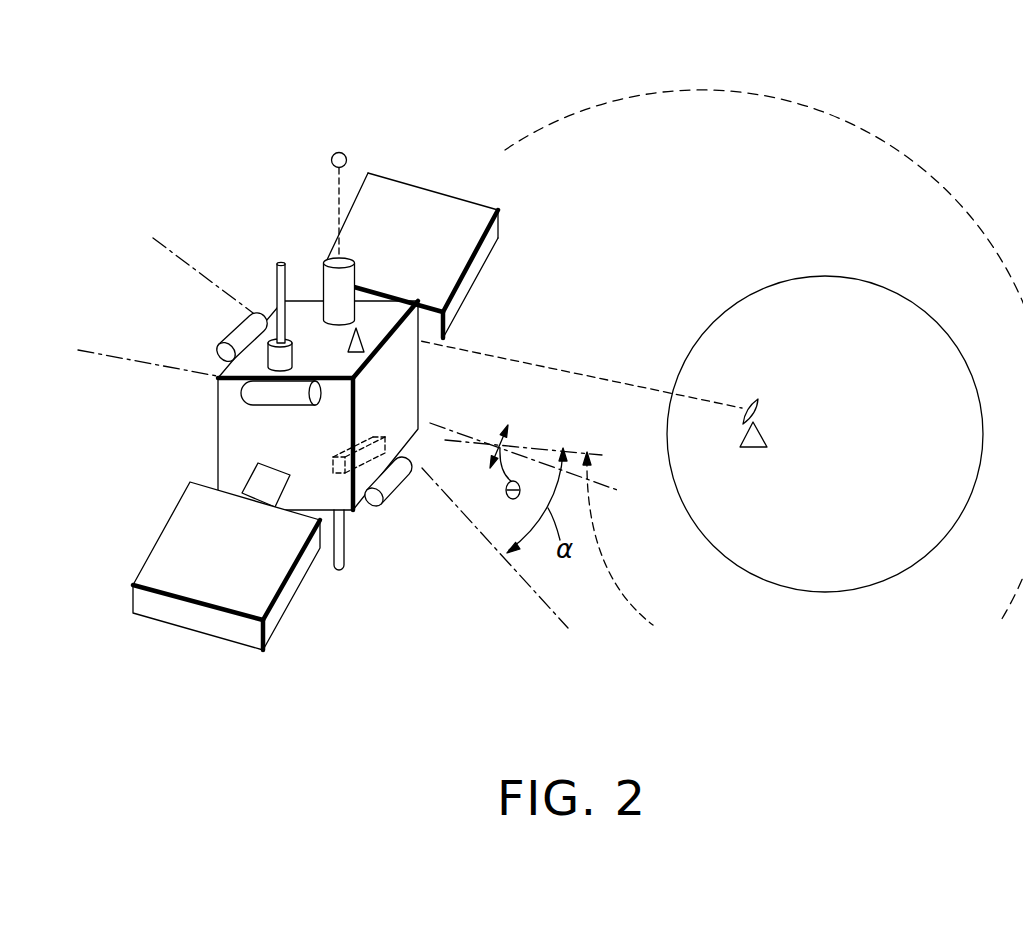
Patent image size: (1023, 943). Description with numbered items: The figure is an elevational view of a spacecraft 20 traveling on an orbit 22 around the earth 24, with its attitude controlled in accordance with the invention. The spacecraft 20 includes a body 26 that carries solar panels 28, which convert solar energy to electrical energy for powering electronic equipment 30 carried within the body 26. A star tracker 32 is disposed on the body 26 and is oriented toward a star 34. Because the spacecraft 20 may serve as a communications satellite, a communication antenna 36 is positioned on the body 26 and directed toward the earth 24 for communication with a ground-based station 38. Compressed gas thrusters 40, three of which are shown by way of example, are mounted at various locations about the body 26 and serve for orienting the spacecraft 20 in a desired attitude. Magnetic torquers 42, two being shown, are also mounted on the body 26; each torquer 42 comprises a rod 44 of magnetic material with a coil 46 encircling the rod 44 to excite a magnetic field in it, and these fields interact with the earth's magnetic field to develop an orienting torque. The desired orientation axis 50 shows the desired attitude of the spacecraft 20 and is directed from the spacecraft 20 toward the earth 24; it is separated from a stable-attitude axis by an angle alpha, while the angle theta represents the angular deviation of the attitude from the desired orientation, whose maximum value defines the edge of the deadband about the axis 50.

The spacecraft 20 is at (314, 205).
The orbit 22 is at (833, 112).
The earth 24 is at (840, 292).
The body 26 is at (218, 390).
The solar panels 28 is at (412, 187).
The electronic equipment 30 is at (337, 467).
The star tracker 32 is at (355, 273).
The star 34 is at (338, 152).
The communication antenna 36 is at (357, 329).
The ground-based station 38 is at (757, 402).
The compressed gas thrusters 40 is at (237, 330).
The magnetic torquers 42 is at (266, 241).
The rod 44 is at (276, 278).
The coil 46 is at (270, 350).
The desired orientation axis 50 is at (700, 584).